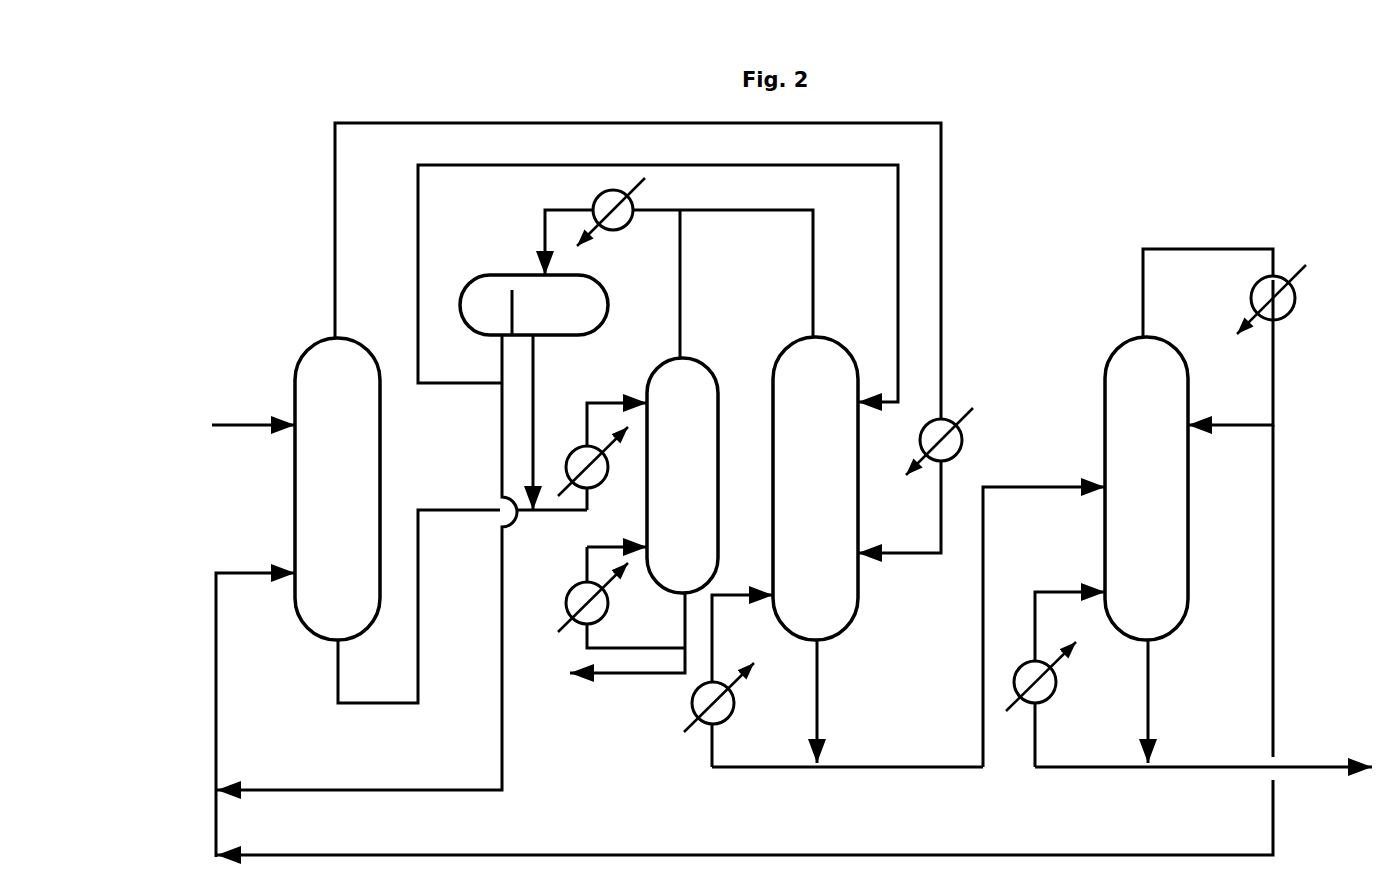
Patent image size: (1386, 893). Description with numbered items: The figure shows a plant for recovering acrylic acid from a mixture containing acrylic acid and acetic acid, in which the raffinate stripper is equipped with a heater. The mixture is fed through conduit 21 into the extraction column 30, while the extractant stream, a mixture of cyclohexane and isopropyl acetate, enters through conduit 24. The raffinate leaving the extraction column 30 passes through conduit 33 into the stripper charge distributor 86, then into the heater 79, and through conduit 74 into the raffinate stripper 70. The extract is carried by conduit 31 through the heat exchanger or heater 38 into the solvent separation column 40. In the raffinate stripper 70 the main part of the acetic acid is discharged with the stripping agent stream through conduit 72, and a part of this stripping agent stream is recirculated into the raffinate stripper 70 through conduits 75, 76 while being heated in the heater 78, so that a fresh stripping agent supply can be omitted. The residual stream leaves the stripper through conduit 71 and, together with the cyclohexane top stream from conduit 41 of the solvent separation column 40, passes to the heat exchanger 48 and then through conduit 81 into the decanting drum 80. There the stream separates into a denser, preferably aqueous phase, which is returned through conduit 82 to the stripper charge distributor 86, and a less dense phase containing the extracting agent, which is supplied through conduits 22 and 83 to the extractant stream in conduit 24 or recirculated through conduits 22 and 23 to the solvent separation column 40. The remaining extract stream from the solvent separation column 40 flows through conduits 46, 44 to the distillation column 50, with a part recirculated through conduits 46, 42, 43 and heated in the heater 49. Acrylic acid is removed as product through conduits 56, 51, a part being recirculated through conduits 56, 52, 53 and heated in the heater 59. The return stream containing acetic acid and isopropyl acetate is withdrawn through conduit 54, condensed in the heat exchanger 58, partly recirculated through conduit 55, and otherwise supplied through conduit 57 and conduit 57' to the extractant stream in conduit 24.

The conduit 21 is at (236, 421).
The conduit 22 is at (500, 369).
The conduit 23 is at (418, 259).
The conduit 24 is at (218, 683).
The extraction column 30 is at (337, 489).
The conduit 31 is at (335, 271).
The conduit 33 is at (375, 703).
The heater 38 is at (964, 440).
The solvent separation column 40 is at (815, 488).
The conduit 41 is at (815, 267).
The conduit 42 is at (752, 770).
The conduit 43 is at (735, 603).
The conduit 44 is at (1007, 493).
The conduit 46 is at (820, 667).
The heat exchanger 48 is at (596, 199).
The heater 49 is at (693, 703).
The distillation column 50 is at (1146, 488).
The conduit 51 is at (1217, 778).
The conduit 52 is at (1092, 780).
The conduit 53 is at (1067, 591).
The conduit 54 is at (1143, 285).
The conduit 55 is at (1228, 419).
The conduit 56 is at (1143, 685).
The conduit 57 is at (745, 640).
The conduit 57' is at (184, 823).
The heat exchanger 58 is at (1286, 274).
The heater 59 is at (1029, 671).
The raffinate stripper 70 is at (682, 475).
The conduit 71 is at (682, 271).
The conduit 72 is at (596, 684).
The conduit 74 is at (610, 403).
The conduit 75 is at (640, 647).
The conduit 76 is at (610, 546).
The heater 78 is at (565, 603).
The heater 79 is at (597, 476).
The decanting drum 80 is at (534, 305).
The conduit 81 is at (544, 228).
The conduit 82 is at (536, 365).
The conduit 83 is at (505, 750).
The stripper charge distributor 86 is at (548, 518).